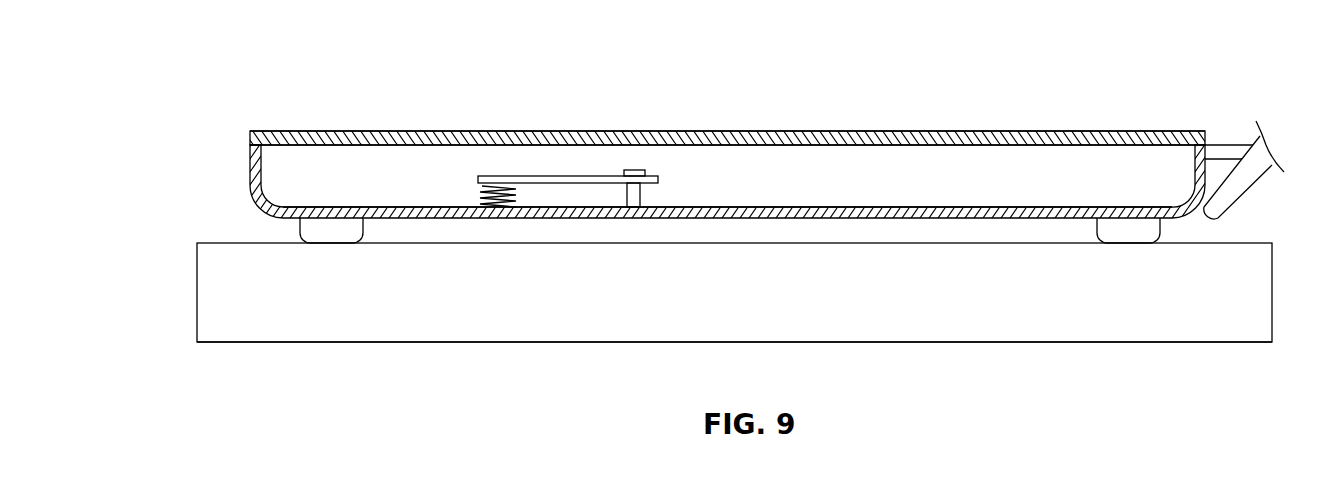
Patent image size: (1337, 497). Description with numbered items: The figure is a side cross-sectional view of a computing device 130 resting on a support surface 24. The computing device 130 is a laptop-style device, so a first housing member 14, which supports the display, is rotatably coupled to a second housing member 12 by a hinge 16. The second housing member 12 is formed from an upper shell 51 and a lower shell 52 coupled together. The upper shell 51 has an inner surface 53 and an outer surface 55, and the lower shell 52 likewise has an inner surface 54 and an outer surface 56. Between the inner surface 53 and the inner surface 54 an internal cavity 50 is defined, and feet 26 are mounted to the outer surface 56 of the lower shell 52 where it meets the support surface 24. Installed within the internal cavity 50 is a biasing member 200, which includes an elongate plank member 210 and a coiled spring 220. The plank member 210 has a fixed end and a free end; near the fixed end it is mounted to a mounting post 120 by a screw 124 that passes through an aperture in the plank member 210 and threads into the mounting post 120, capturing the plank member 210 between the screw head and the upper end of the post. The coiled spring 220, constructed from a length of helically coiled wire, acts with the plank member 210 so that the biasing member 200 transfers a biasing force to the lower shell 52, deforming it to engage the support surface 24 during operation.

The computing device 130 is at (311, 60).
The second housing member 12 is at (240, 146).
The first housing member 14 is at (1243, 188).
The hinge 16 is at (1221, 124).
The support surface 24 is at (230, 243).
The feet 26 is at (363, 220).
The internal cavity 50 is at (872, 157).
The upper shell 51 is at (294, 124).
The lower shell 52 is at (965, 197).
The inner surface 53 is at (1050, 148).
The inner surface 54 is at (790, 206).
The outer surface 55 is at (1108, 131).
The outer surface 56 is at (829, 218).
The mounting post 120 is at (640, 190).
The screw 124 is at (645, 171).
The biasing member 200 is at (540, 162).
The elongate plank member 210 is at (562, 176).
The coiled spring 220 is at (478, 192).